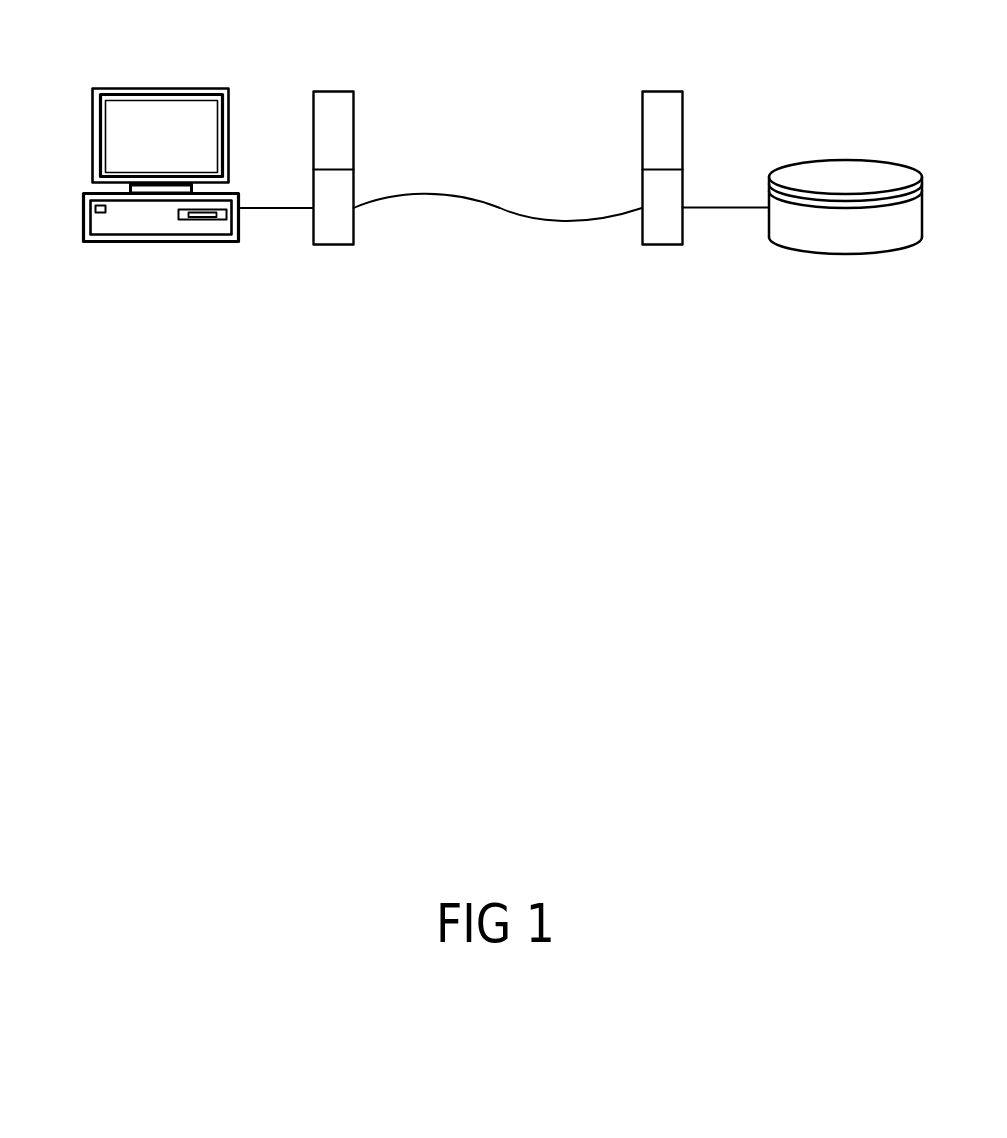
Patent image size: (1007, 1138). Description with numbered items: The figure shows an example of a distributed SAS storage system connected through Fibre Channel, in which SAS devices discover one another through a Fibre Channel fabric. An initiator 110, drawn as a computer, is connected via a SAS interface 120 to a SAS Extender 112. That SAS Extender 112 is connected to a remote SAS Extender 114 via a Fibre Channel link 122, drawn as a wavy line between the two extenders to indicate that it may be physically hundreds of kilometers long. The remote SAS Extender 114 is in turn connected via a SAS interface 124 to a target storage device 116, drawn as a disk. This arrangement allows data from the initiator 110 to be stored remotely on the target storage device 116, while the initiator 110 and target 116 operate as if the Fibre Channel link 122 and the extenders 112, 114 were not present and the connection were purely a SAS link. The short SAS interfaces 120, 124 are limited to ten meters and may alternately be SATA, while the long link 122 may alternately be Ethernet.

The initiator 110 is at (158, 88).
The SAS Extender 112 is at (332, 91).
The remote SAS Extender 114 is at (660, 91).
The target storage device 116 is at (845, 160).
The SAS interface 120 is at (272, 209).
The Fibre Channel link 122 is at (528, 218).
The SAS interface 124 is at (710, 210).